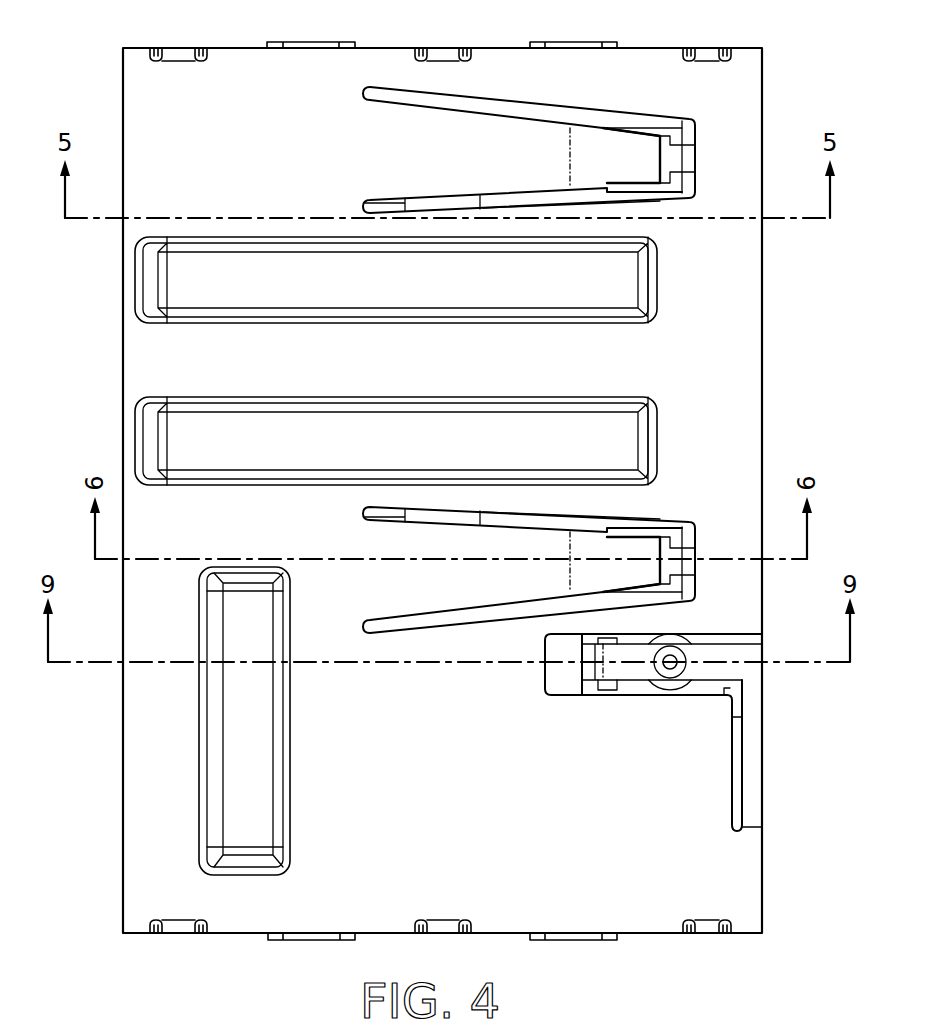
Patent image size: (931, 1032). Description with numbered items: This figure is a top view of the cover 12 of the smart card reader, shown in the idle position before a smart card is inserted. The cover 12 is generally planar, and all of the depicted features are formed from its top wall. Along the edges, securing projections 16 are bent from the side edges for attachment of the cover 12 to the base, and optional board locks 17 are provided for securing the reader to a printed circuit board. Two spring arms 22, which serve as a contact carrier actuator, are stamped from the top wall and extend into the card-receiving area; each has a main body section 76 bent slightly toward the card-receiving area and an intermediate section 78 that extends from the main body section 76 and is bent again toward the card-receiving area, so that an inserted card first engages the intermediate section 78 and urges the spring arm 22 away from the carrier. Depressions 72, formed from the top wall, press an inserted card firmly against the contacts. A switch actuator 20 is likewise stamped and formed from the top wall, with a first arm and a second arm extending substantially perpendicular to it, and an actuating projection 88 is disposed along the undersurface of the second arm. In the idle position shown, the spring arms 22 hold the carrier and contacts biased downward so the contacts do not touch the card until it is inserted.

The cover 12 is at (775, 93).
The securing projections 16 is at (178, 48).
The board locks 17 is at (298, 40).
The switch actuator 20 is at (758, 775).
The spring arms 22 is at (430, 148).
The depressions 72 is at (175, 275).
The main body section 76 is at (540, 140).
The intermediate section 78 is at (645, 145).
The actuating projection 88 is at (670, 676).